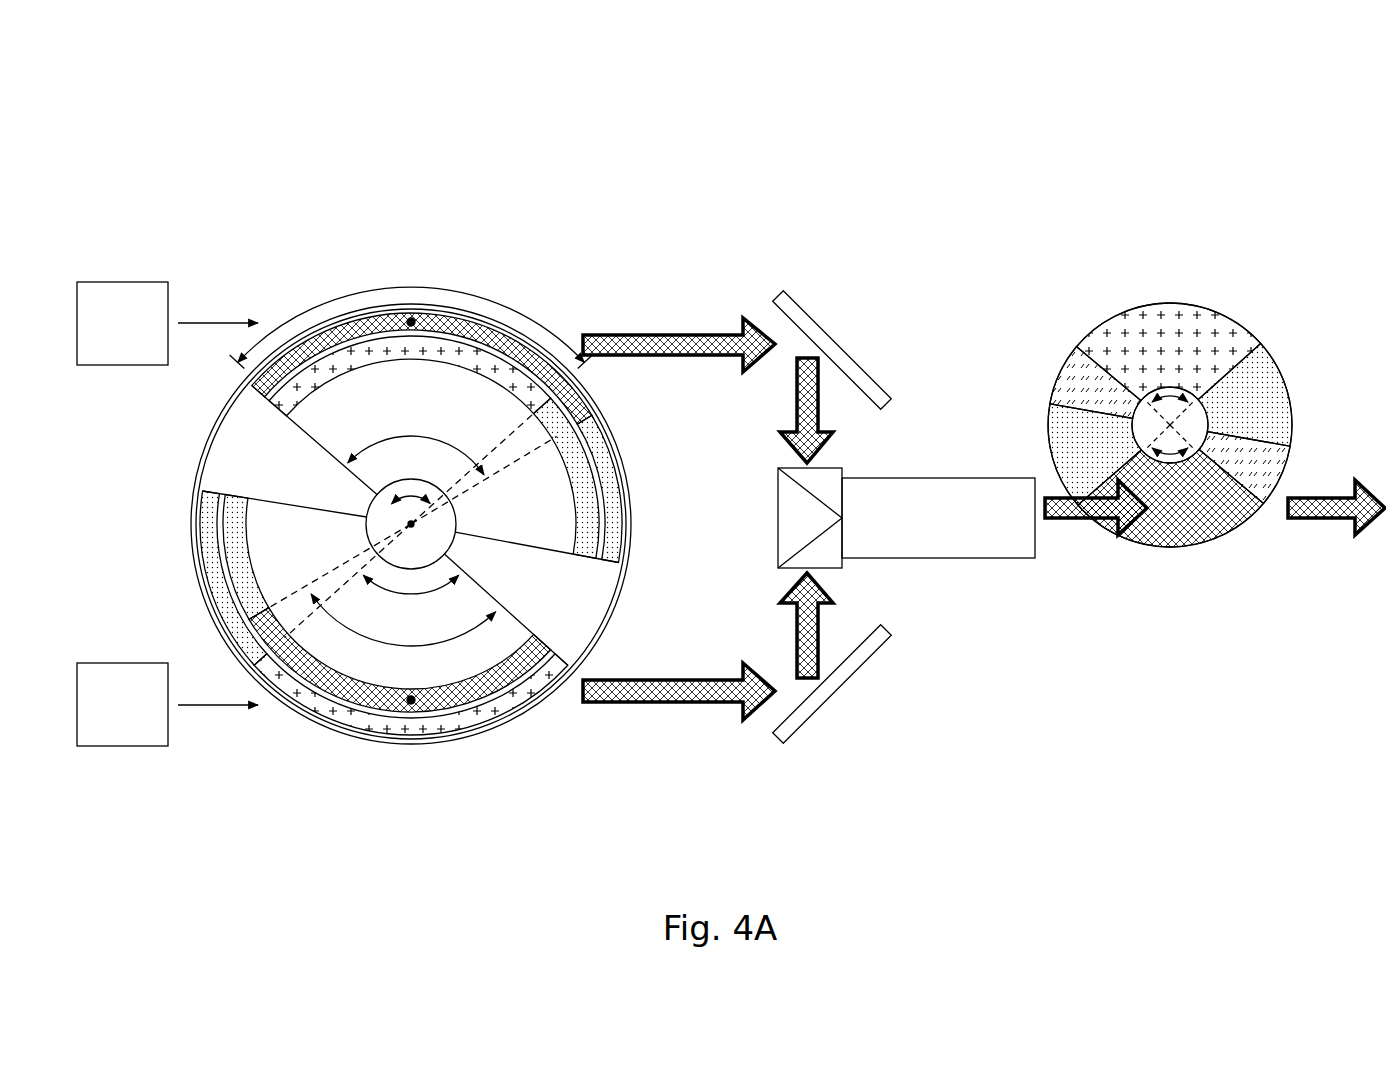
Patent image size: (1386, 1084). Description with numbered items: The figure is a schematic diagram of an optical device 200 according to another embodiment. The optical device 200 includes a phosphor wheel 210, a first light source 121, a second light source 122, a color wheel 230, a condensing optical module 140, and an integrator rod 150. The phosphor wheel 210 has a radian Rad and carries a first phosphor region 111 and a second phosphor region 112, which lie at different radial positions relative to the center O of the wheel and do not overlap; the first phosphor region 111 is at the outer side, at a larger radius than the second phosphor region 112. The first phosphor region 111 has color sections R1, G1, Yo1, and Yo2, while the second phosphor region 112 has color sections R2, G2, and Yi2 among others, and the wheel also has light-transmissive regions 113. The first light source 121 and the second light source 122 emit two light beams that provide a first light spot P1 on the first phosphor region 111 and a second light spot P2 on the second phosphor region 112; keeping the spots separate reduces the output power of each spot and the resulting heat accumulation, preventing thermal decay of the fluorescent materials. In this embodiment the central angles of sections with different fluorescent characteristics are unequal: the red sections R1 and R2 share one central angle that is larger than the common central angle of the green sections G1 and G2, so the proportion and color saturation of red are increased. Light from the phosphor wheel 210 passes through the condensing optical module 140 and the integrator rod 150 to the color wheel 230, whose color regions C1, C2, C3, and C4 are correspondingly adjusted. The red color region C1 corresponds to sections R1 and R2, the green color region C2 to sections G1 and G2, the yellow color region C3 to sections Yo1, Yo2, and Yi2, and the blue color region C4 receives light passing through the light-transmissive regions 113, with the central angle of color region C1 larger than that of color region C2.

The optical device 200 is at (125, 76).
The first light source 121 is at (120, 282).
The second light source 122 is at (120, 663).
The phosphor wheel 210 is at (420, 476).
The first phosphor region 111 is at (613, 574).
The second phosphor region 112 is at (585, 572).
The light-transmissive regions 113 is at (240, 458).
The condensing optical module 140 is at (880, 278).
The integrator rod 150 is at (993, 478).
The color wheel 230 is at (1168, 381).
The color section R1 is at (262, 392).
The color section R2 is at (363, 712).
The color section G1 is at (303, 722).
The color section G2 is at (280, 408).
The color section Yi2 is at (238, 573).
The color section Yo1 is at (613, 545).
The color section Yo2 is at (207, 536).
The first light spot P1 is at (410, 326).
The second light spot P2 is at (411, 704).
The rotation center O is at (411, 524).
The radian Rad is at (415, 283).
The color region C1 is at (1167, 455).
The color region C2 is at (1165, 320).
The color region C3 is at (1270, 385).
The color region C4 is at (1075, 385).